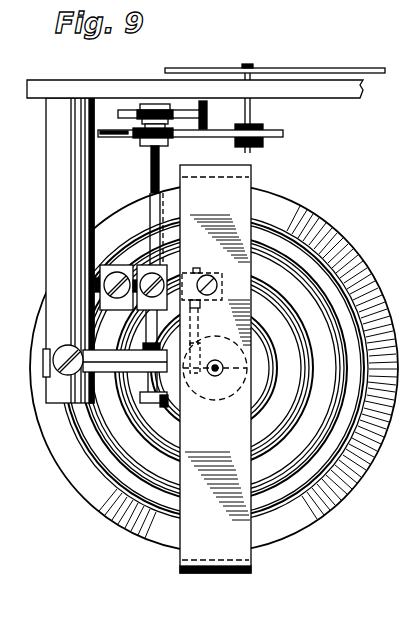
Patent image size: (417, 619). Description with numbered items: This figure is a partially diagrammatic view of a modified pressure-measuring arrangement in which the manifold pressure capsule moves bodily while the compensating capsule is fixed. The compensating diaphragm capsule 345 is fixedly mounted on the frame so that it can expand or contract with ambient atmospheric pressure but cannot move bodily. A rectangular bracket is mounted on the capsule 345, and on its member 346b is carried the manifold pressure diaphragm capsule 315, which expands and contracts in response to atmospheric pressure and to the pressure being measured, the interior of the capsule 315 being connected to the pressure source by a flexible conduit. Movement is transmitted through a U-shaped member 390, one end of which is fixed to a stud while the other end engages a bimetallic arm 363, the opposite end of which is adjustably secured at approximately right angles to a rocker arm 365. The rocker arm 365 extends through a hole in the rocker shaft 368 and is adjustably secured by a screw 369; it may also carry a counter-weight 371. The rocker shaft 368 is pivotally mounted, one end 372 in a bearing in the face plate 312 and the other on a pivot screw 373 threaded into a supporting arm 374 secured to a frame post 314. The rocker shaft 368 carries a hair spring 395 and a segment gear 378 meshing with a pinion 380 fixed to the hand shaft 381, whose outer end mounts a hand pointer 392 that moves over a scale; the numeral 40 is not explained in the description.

The face plate 312 is at (74, 88).
The frame post 314 is at (48, 188).
The manifold pressure diaphragm capsule 315 is at (167, 540).
The compensating diaphragm capsule 345 is at (125, 488).
The member of bracket 346b is at (240, 548).
The bimetallic arm 363 is at (205, 320).
The rocker arm 365 is at (100, 283).
The rocker shaft 368 is at (149, 165).
The screw 369 is at (185, 271).
The counter-weight 371 is at (152, 280).
The end of rocker shaft 372 is at (152, 105).
The pivot screw 373 is at (143, 388).
The supporting arm 374 is at (108, 375).
The segment gear 378 is at (213, 130).
The pinion 380 is at (263, 128).
The hand shaft 381 is at (255, 108).
The U-shaped member 390 is at (219, 391).
The hand pointer 392 is at (281, 69).
The hair spring 395 is at (117, 115).
The wheel 40 is at (249, 368).